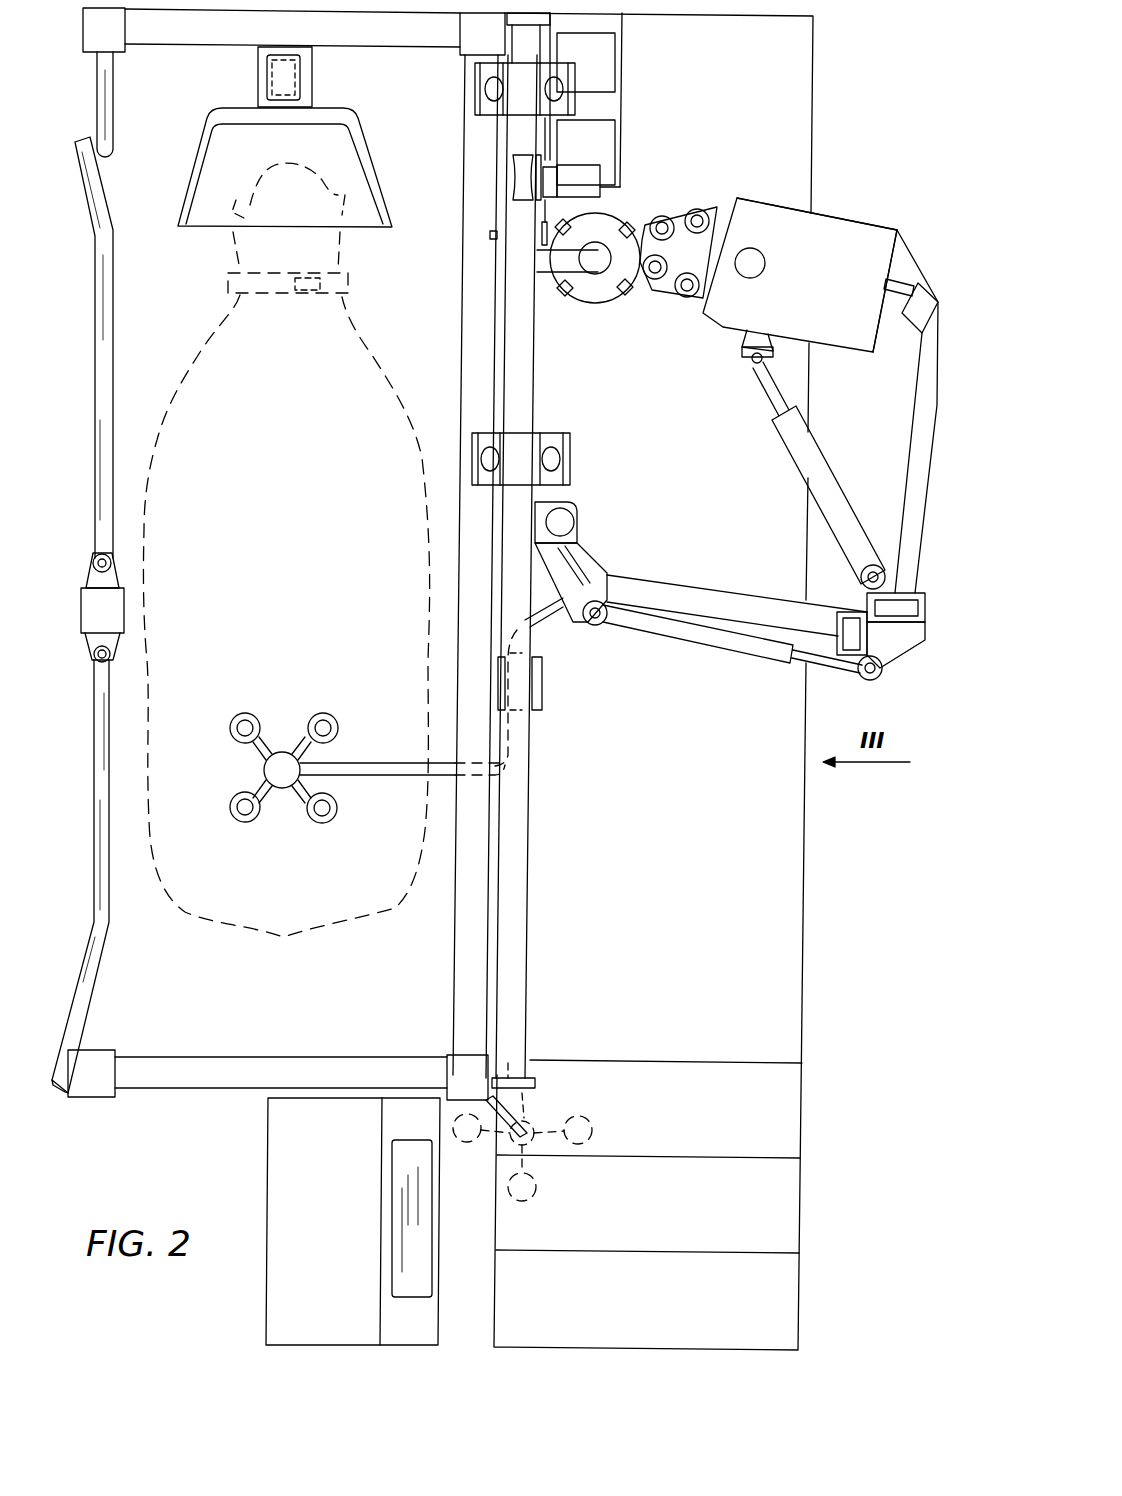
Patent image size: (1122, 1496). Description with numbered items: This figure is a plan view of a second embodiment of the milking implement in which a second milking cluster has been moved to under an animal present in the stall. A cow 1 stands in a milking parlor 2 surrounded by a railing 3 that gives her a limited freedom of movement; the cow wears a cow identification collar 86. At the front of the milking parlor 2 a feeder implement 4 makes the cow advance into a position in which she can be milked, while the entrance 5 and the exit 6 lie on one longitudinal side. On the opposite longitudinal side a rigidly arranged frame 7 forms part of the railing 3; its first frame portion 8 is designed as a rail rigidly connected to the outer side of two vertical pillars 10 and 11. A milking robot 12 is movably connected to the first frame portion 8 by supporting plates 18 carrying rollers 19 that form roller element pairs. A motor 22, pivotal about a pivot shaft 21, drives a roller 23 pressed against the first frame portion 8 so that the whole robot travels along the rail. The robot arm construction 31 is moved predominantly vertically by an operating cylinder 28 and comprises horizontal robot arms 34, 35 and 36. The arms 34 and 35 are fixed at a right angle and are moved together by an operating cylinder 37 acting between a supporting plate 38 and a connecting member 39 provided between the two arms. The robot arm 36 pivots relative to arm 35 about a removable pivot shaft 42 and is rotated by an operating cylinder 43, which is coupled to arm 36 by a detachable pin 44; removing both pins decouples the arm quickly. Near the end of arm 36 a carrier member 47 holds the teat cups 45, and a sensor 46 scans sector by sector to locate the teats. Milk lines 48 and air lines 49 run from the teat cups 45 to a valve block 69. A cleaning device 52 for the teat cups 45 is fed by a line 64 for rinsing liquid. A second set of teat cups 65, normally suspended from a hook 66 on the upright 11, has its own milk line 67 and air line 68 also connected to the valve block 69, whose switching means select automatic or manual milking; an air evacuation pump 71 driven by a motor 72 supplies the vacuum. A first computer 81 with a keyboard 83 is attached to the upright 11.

The cow 1 is at (366, 381).
The milking parlor 2 is at (325, 990).
The railing 3 is at (124, 132).
The feeder implement 4 is at (353, 160).
The entrance 5 is at (100, 912).
The exit 6 is at (106, 352).
The frame 7 is at (447, 570).
The first frame portion 8 is at (525, 395).
The vertical pillar 10 is at (120, 50).
The vertical pillar 11 is at (105, 1050).
The milking robot 12 is at (872, 192).
The supporting plate 18 is at (478, 118).
The roller 19 is at (490, 91).
The pivot shaft 21 is at (490, 236).
The motor 22 is at (592, 174).
The roller 23 is at (520, 177).
The operating cylinder 28 is at (566, 520).
The robot arm construction 31 is at (895, 438).
The robot arm 34 is at (727, 593).
The robot arm 35 is at (912, 388).
The robot arm 36 is at (797, 190).
The operating cylinder 37 is at (718, 638).
The supporting plate 38 is at (590, 553).
The connecting member 39 is at (893, 640).
The pivot shaft 42 is at (885, 281).
The operating cylinder 43 is at (797, 445).
The detachable pin 44 is at (747, 355).
The teat cups 45 is at (715, 210).
The sensor 46 is at (760, 257).
The carrier member 47 is at (693, 252).
The milk line 48 is at (574, 682).
The air line 49 is at (550, 615).
The cleaning device 52 is at (602, 308).
The line 64 is at (549, 262).
The second set of teat cups 65 is at (275, 724).
The hook 66 is at (491, 1125).
The milk line 67 is at (402, 797).
The air line 68 is at (397, 777).
The valve block 69 is at (552, 715).
The air evacuation pump 71 is at (603, 143).
The motor 72 is at (603, 50).
The first computer 81 is at (255, 1167).
The keyboard 83 is at (395, 1222).
The cow identification collar 86 is at (281, 303).